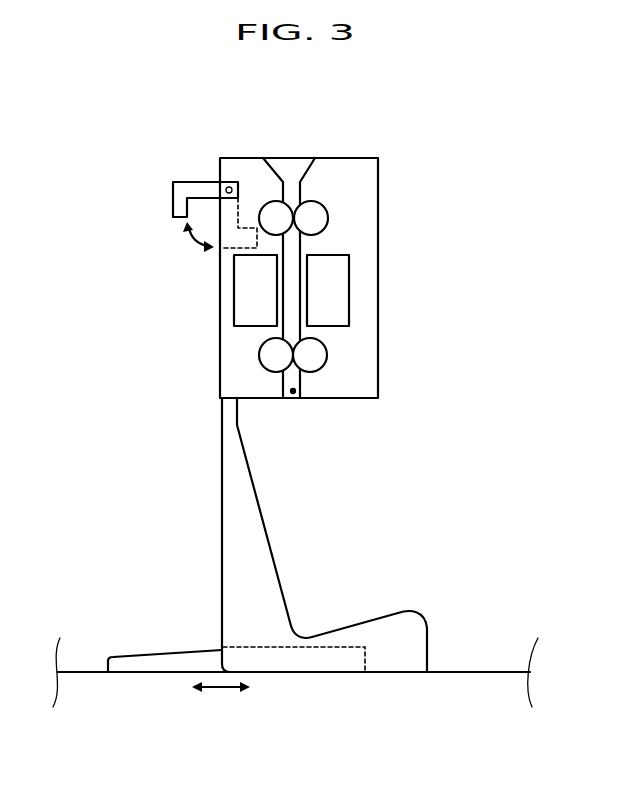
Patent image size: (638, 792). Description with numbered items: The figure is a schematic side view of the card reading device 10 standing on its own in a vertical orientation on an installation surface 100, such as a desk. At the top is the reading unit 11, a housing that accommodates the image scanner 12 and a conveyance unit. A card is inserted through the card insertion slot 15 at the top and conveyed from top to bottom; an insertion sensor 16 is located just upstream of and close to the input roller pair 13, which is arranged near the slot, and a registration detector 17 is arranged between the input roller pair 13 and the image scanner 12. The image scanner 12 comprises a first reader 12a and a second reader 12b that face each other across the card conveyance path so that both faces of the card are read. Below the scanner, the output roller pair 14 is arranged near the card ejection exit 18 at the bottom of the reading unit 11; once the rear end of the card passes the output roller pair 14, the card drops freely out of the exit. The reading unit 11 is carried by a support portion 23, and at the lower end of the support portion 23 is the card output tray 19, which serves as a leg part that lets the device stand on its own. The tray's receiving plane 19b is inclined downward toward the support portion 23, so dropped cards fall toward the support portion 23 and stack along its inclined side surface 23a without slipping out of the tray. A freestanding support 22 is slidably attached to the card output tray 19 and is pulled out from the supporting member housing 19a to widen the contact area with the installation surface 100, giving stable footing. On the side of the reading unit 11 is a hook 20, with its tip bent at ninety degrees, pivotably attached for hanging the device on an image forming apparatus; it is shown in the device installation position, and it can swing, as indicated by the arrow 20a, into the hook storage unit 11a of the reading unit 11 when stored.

The card reading device 10 is at (150, 348).
The reading unit 11 is at (378, 385).
The hook storage unit 11a is at (247, 228).
The image scanner 12 is at (298, 299).
The first reader 12a is at (349, 267).
The second reader 12b is at (233, 320).
The input roller pair 13 is at (328, 218).
The output roller pair 14 is at (327, 355).
The card insertion slot 15 is at (293, 170).
The insertion sensor 16 is at (276, 197).
The registration detector 17 is at (278, 245).
The card ejection exit 18 is at (293, 391).
The card output tray 19 is at (427, 640).
The supporting member housing 19a is at (365, 655).
The plane 19b is at (380, 612).
The hook 20 is at (176, 181).
The rotating portion of guide member 20a is at (160, 206).
The freestanding support 22 is at (105, 672).
The support portion 23 is at (220, 556).
The side surface 23a is at (265, 533).
The installation surface 100 is at (80, 672).